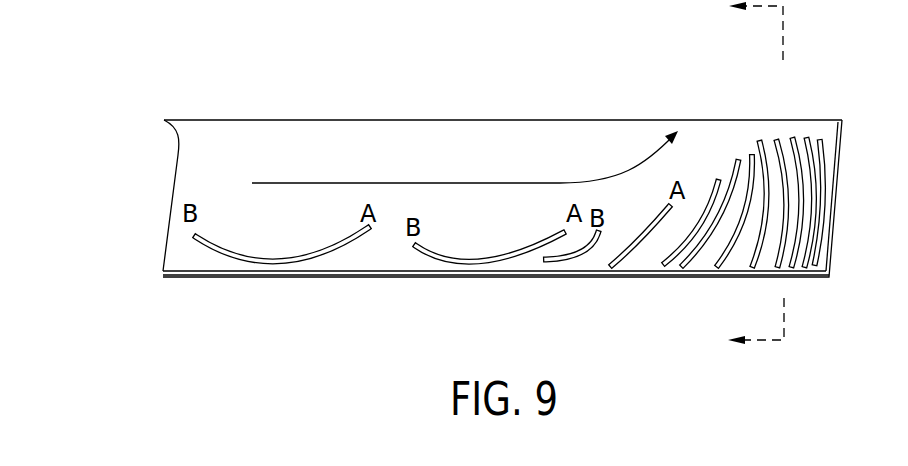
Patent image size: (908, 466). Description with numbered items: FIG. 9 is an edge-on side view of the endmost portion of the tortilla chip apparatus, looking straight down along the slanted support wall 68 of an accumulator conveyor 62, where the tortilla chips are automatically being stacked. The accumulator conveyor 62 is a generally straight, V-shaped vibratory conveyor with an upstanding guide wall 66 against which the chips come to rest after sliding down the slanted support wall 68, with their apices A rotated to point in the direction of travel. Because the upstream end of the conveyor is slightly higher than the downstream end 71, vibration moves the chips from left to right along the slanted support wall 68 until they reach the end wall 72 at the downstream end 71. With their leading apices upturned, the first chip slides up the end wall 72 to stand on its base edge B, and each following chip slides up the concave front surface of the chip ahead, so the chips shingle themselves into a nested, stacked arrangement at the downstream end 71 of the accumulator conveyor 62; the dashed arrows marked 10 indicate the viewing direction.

The accumulator conveyor 62 is at (360, 74).
The guide wall 66 is at (481, 137).
The slanted support wall 68 is at (343, 275).
The downstream end 71 is at (820, 300).
The end wall 72 is at (843, 133).
The direction indicator 10 is at (751, 193).